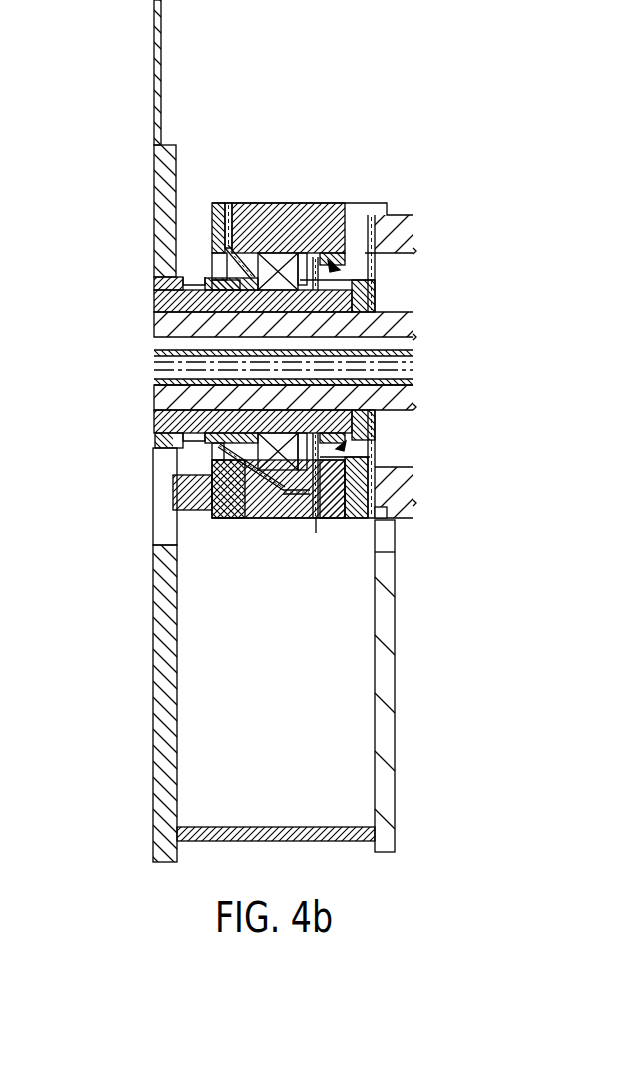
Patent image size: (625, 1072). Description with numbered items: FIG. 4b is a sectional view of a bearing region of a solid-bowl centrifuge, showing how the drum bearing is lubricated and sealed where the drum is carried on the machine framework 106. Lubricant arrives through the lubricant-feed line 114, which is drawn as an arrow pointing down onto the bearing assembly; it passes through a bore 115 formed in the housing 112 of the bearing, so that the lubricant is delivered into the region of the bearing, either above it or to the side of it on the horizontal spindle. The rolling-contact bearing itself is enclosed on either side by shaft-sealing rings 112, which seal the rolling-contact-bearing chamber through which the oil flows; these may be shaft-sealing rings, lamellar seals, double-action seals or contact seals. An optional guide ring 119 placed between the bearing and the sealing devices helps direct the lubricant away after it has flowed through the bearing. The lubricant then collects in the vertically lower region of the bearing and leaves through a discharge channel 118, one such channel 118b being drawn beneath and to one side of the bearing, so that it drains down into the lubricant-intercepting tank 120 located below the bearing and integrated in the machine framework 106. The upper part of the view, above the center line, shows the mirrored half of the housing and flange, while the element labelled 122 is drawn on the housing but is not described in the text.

The machine framework 106 is at (168, 723).
The shaft-sealing ring 112 is at (224, 279).
The lubricant-feed line 114 is at (228, 170).
The bore 115 is at (264, 203).
The discharge channel 118 is at (332, 486).
The discharge channel 118b is at (212, 518).
The guide ring 119 is at (327, 247).
The lubricant-intercepting tank 120 is at (350, 802).
The cover 122 is at (303, 203).